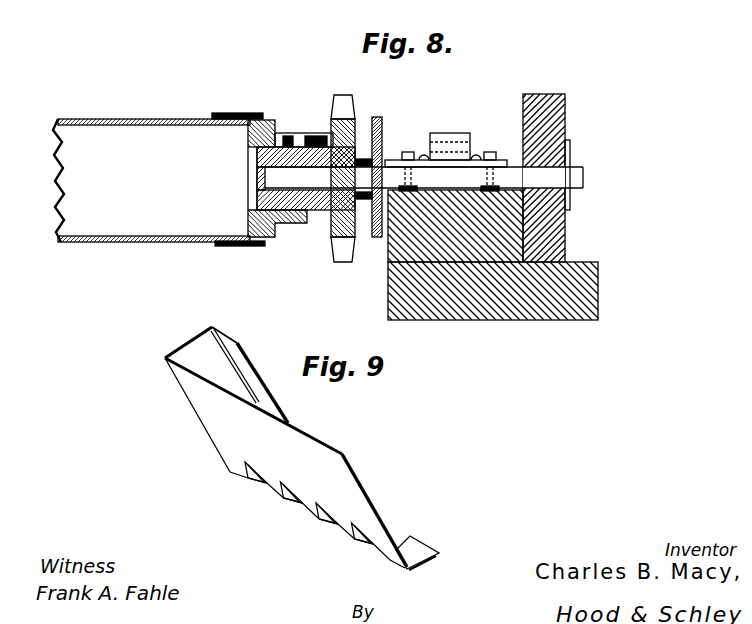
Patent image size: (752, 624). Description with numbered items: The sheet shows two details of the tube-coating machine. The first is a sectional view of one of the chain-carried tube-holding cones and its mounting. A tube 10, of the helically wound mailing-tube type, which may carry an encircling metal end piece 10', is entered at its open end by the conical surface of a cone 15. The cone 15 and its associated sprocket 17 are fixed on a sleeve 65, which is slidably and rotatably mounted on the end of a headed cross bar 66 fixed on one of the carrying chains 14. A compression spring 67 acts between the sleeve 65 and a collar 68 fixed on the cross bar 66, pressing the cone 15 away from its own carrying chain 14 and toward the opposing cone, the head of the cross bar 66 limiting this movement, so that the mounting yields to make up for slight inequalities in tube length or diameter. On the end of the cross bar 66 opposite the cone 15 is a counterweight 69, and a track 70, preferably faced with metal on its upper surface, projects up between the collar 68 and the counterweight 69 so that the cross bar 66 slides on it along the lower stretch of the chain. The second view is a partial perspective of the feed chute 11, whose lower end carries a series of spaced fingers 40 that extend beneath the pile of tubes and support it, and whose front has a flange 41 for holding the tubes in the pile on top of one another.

In FIG. 8, the tube 10 is at (151, 165).
In FIG. 8, the encircling metal end piece 10' is at (235, 163).
In FIG. 9, the feed chute 11 is at (213, 433).
In FIG. 8, the carrying chain 14 is at (437, 135).
In FIG. 8, the tube-holding cone 15 is at (277, 118).
In FIG. 8, the sprocket 17 is at (353, 95).
In FIG. 9, the spaced finger 40 is at (422, 538).
In FIG. 9, the flange 41 is at (237, 342).
In FIG. 8, the sleeve 65 is at (256, 203).
In FIG. 8, the headed cross bar 66 is at (584, 168).
In FIG. 8, the compression spring 67 is at (366, 200).
In FIG. 8, the collar 68 is at (382, 117).
In FIG. 8, the counterweight 69 is at (567, 118).
In FIG. 8, the track 70 is at (497, 238).